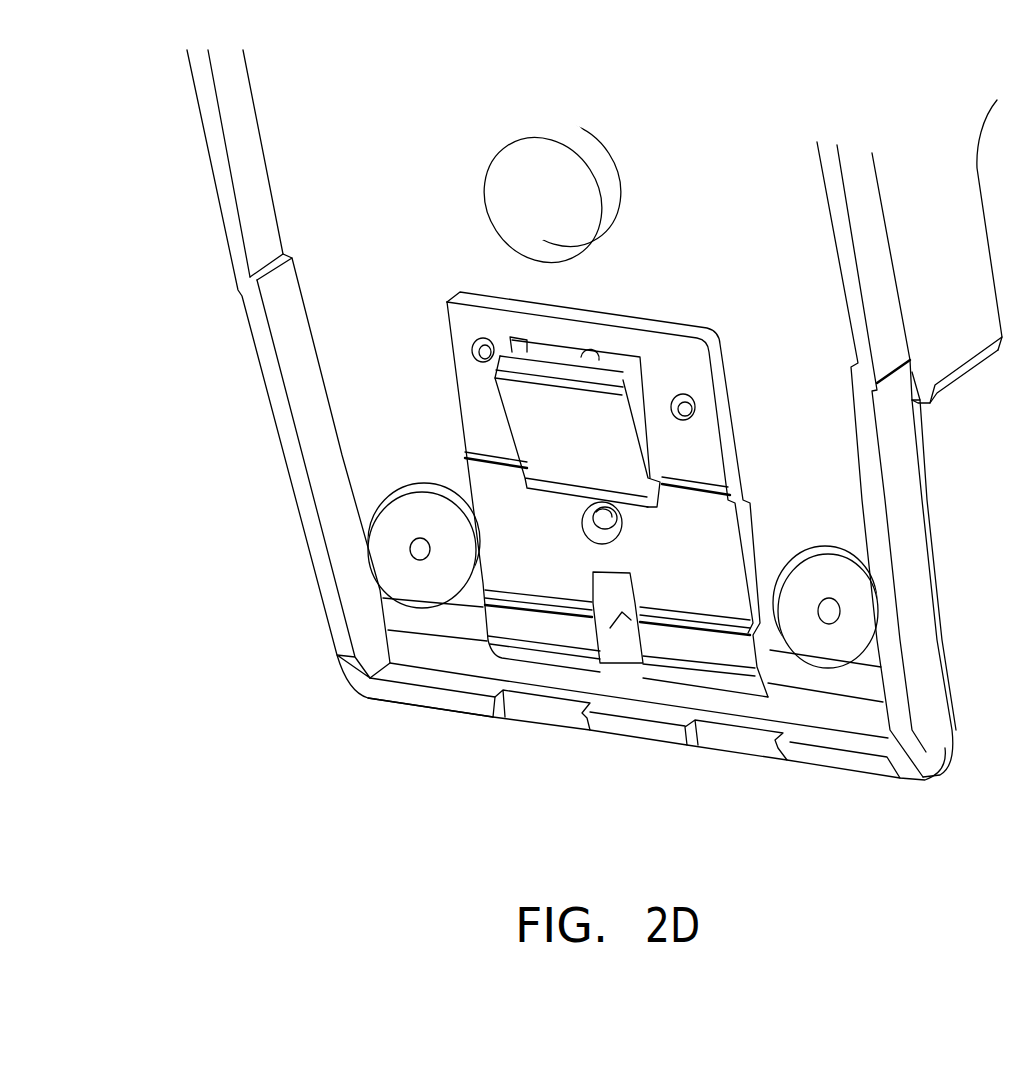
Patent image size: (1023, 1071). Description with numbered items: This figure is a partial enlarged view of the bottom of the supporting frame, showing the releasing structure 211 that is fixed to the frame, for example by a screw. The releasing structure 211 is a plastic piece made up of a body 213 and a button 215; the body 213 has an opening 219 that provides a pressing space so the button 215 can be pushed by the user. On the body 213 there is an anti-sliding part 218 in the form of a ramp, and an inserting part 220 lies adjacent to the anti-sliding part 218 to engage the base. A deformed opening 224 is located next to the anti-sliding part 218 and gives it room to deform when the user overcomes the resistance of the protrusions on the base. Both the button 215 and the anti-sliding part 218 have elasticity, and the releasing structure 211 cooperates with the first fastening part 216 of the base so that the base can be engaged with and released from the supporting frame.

The releasing structure 211 is at (418, 355).
The body 213 is at (596, 314).
The button 215 is at (540, 407).
The first fastening part 216 is at (643, 398).
The anti-sliding part 218 is at (697, 614).
The opening 219 is at (645, 393).
The inserting part 220 is at (699, 682).
The deformed opening 224 is at (622, 616).